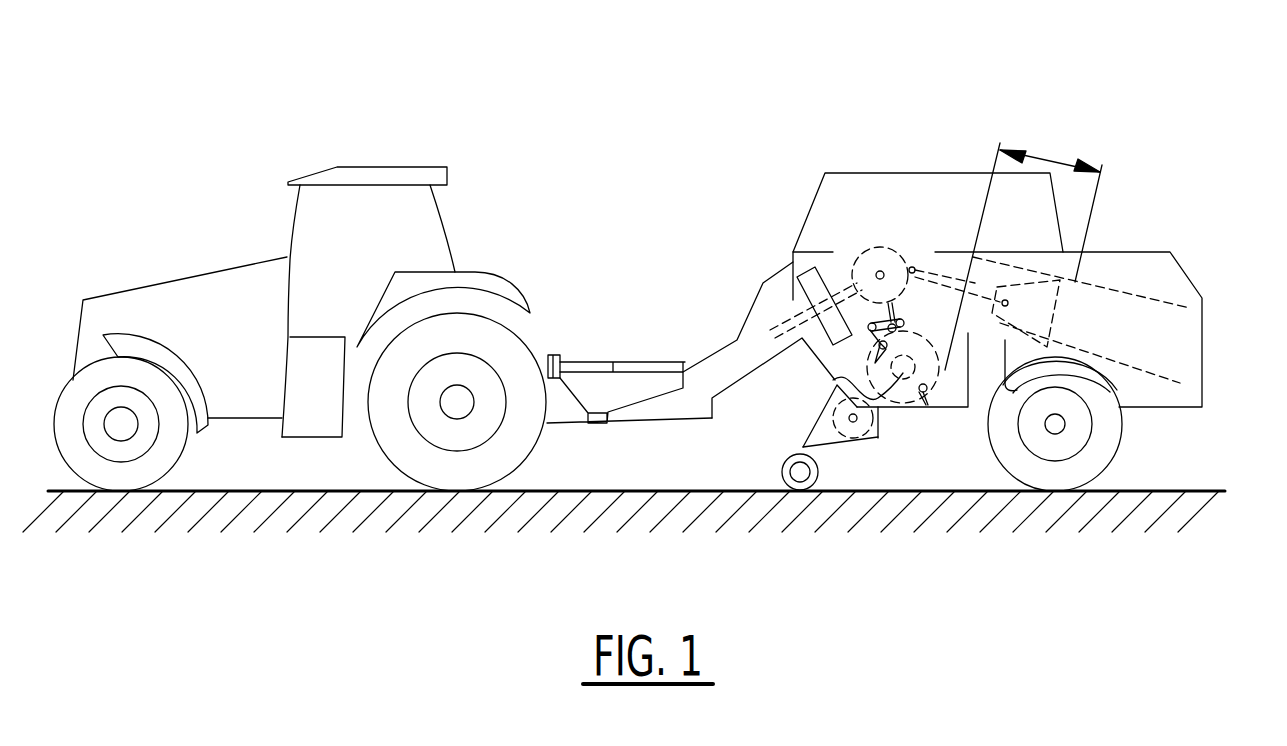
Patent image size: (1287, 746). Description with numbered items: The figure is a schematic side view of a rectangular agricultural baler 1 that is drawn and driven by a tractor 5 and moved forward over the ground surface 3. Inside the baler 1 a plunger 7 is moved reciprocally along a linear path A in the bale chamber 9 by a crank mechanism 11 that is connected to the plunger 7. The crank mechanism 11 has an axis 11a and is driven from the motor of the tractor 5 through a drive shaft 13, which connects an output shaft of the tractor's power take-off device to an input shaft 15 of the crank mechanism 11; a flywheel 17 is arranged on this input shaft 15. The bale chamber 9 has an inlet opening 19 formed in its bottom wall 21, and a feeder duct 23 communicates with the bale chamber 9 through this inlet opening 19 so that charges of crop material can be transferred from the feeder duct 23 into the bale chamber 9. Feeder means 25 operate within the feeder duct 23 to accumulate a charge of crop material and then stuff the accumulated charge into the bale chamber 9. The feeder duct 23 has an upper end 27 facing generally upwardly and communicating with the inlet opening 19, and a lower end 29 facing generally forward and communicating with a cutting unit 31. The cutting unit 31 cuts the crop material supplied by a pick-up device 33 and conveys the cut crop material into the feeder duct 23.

The rectangular agricultural baler 1 is at (992, 100).
The ground surface 3 is at (1143, 490).
The tractor 5 is at (202, 290).
The plunger 7 is at (1038, 322).
The bale chamber 9 is at (1163, 340).
The crank mechanism 11 is at (908, 183).
The axis 11a is at (884, 272).
The drive shaft 13 is at (633, 362).
The input shaft 15 is at (842, 292).
The flywheel 17 is at (793, 295).
The inlet opening 19 is at (963, 332).
The bottom wall 21 is at (1117, 389).
The feeder duct 23 is at (905, 418).
The feeder means 25 is at (833, 380).
The upper end 27 is at (932, 305).
The lower end 29 is at (883, 423).
The cutting unit 31 is at (835, 455).
The pick-up device 33 is at (817, 455).
The linear path A is at (1023, 243).